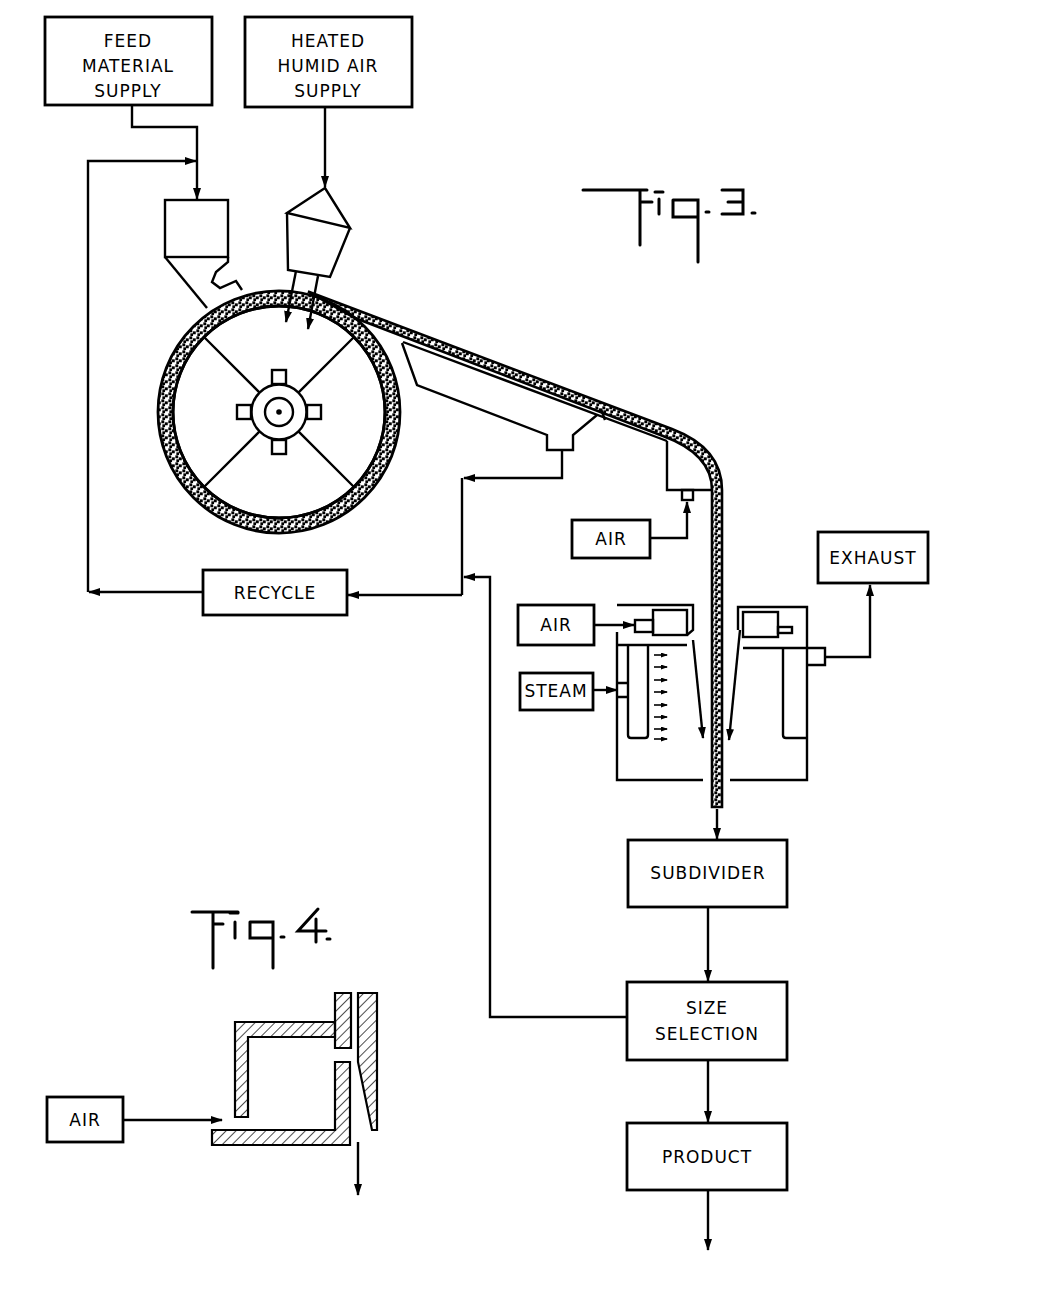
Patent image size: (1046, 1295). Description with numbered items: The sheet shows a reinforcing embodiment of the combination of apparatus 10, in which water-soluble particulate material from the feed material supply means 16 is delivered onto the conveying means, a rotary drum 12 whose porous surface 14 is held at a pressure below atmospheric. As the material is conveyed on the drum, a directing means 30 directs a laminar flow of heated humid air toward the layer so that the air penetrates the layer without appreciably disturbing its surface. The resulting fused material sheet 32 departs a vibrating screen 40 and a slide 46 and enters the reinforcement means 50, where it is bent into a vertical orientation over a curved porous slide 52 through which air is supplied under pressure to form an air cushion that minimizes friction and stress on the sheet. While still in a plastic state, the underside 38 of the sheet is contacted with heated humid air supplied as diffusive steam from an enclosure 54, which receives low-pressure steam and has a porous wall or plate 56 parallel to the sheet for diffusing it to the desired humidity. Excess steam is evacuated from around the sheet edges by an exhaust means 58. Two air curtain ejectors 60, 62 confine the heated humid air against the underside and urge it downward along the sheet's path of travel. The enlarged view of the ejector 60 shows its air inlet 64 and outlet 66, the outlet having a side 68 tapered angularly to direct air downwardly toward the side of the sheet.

In FIG. 3, the combination of apparatus 10 is at (478, 291).
In FIG. 3, the rotary drum 12 is at (207, 491).
In FIG. 3, the porous surface 14 is at (176, 418).
In FIG. 3, the feed material supply means 16 is at (162, 237).
In FIG. 3, the directing means 30 is at (330, 243).
In FIG. 3, the fused material sheet 32 is at (690, 423).
In FIG. 3, the underside 38 is at (711, 567).
In FIG. 3, the vibrating screen 40 is at (488, 406).
In FIG. 3, the slide 46 is at (634, 421).
In FIG. 3, the reinforcement means 50 is at (755, 597).
In FIG. 3, the curved porous slide 52 is at (676, 475).
In FIG. 3, the enclosure 54 is at (617, 767).
In FIG. 3, the porous wall or plate 56 is at (656, 738).
In FIG. 3, the exhaust means 58 is at (818, 668).
In FIG. 3, the air curtain ejector 60 is at (672, 605).
In FIG. 4, the air curtain ejector 60 is at (293, 1011).
In FIG. 3, the air curtain ejector 62 is at (771, 607).
In FIG. 4, the air inlet 64 is at (230, 1118).
In FIG. 4, the outlet 66 is at (352, 1143).
In FIG. 4, the tapered side 68 is at (370, 1132).